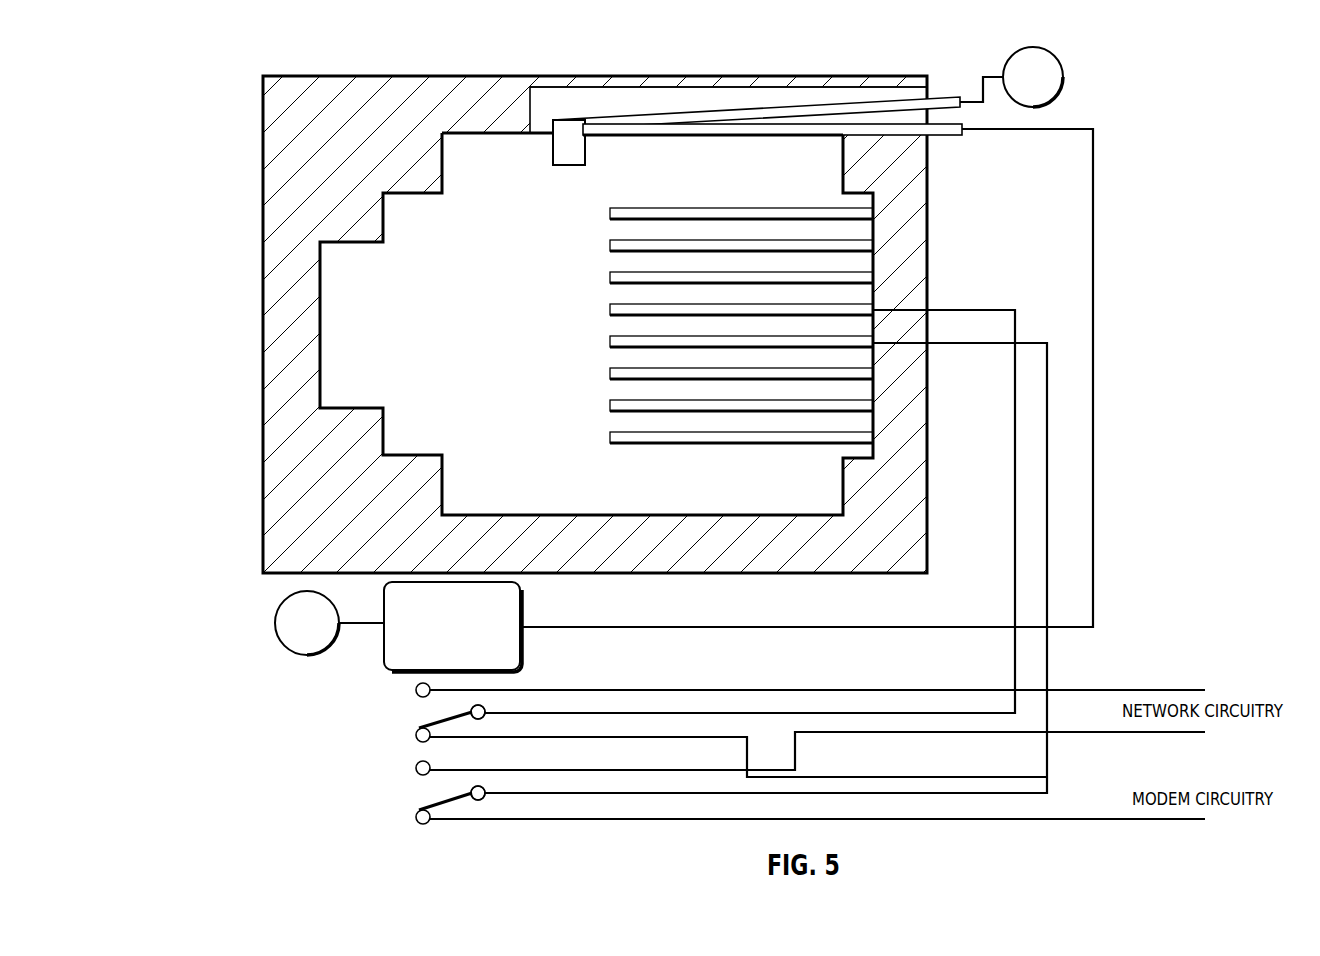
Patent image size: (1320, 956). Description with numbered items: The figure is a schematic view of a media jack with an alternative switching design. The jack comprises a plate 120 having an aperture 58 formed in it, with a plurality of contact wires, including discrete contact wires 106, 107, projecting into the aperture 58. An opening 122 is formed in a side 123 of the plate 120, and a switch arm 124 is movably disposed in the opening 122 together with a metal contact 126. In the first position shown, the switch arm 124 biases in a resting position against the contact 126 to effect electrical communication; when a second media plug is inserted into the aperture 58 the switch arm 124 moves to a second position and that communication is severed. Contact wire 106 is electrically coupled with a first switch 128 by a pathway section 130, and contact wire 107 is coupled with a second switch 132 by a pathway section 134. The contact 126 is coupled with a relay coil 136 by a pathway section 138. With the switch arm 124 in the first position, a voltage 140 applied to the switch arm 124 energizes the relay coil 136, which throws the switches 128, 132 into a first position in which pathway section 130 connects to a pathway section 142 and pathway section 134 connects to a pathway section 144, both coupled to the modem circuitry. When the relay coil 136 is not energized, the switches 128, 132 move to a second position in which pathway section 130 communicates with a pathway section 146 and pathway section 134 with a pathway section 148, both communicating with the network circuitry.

The aperture 58 is at (506, 341).
The contact wire 106 is at (612, 344).
The contact wire 107 is at (612, 307).
The plate 120 is at (270, 147).
The opening 122 is at (551, 103).
The side 123 is at (765, 80).
The switch arm 124 is at (652, 120).
The metal contact 126 is at (757, 128).
The first switch 128 is at (478, 800).
The pathway section 130 is at (605, 793).
The second switch 132 is at (472, 707).
The pathway section 134 is at (623, 712).
The relay coil 136 is at (384, 650).
The pathway section 138 is at (1093, 428).
The voltage 140 is at (1063, 77).
The pathway section 142 is at (680, 820).
The pathway section 144 is at (700, 737).
The pathway section 146 is at (543, 770).
The pathway section 148 is at (845, 690).